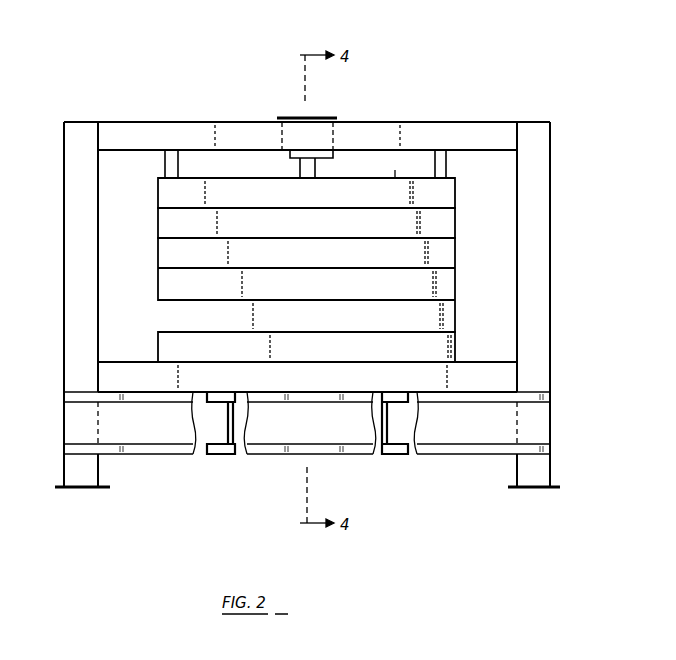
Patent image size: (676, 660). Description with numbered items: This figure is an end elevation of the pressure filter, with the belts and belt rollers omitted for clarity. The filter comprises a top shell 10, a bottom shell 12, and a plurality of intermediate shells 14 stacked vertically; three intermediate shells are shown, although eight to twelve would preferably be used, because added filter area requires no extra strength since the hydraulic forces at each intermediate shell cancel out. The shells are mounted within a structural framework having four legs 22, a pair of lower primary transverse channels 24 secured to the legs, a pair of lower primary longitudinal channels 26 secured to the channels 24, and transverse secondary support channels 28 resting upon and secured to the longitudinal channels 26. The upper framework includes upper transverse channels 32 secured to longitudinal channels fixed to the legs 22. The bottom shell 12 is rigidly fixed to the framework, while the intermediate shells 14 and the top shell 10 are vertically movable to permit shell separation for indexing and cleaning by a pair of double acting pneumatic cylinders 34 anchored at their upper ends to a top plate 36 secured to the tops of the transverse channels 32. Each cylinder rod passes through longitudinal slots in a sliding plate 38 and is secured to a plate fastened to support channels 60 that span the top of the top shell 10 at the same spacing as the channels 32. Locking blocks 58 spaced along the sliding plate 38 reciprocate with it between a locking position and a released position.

The top shell 10 is at (268, 230).
The bottom shell 12 is at (350, 354).
The intermediate shells 14 is at (293, 260).
The legs 22 is at (78, 288).
The lower primary transverse channels 24 is at (323, 428).
The lower primary longitudinal channels 26 is at (223, 456).
The transverse secondary support channels 28 is at (484, 372).
The upper transverse channels 32 is at (420, 130).
The double acting pneumatic cylinders 34 is at (290, 153).
The top plate 36 is at (323, 117).
The sliding plate 38 is at (395, 170).
The locking blocks 58 is at (163, 165).
The support channels 60 is at (351, 204).